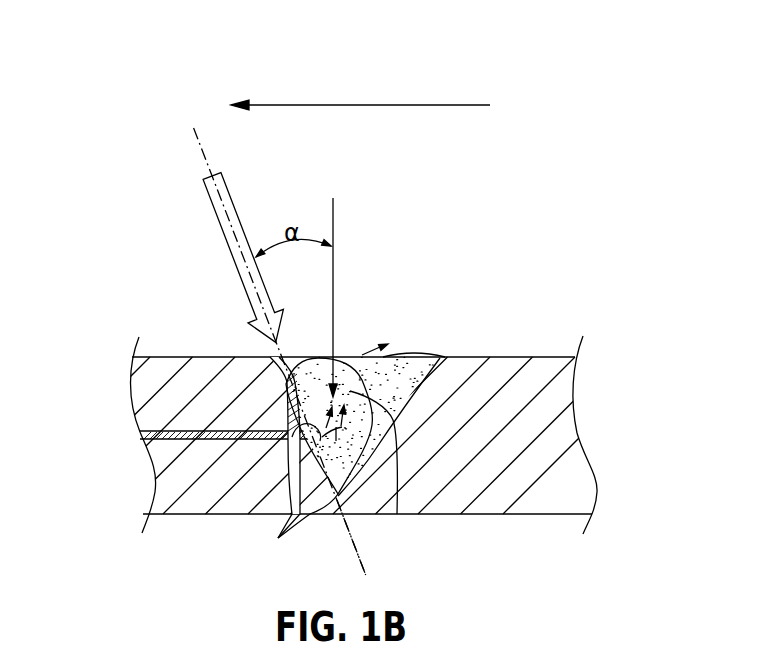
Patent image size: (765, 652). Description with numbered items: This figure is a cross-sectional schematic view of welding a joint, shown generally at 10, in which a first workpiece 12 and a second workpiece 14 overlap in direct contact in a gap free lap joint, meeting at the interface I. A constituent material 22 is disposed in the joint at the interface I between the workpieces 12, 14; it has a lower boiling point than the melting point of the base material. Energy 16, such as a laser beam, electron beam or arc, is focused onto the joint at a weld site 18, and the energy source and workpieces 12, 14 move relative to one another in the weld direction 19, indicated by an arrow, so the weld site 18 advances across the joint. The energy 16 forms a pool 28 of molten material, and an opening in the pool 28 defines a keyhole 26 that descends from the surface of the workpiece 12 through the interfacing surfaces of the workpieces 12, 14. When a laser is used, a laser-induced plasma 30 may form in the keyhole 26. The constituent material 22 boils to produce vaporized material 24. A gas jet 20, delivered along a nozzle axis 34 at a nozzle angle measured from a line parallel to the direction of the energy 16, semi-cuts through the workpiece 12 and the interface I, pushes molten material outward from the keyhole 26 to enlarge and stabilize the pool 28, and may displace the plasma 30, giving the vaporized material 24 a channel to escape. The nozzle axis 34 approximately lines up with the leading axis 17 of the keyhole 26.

The welding of a joint 10 is at (517, 243).
The first workpiece 12 is at (158, 378).
The second workpiece 14 is at (178, 487).
The energy 16 is at (335, 215).
The leading axis 17 is at (363, 567).
The weld site 18 is at (349, 316).
The weld direction 19 is at (358, 105).
The gas jet 20 is at (224, 190).
The constituent material 22 is at (126, 436).
The vaporized material 24 is at (295, 456).
The keyhole 26 is at (308, 352).
The pool of molten material 28 is at (414, 370).
The laser-induced plasma 30 is at (400, 514).
The nozzle axis 34 is at (202, 141).
The interface I is at (126, 437).